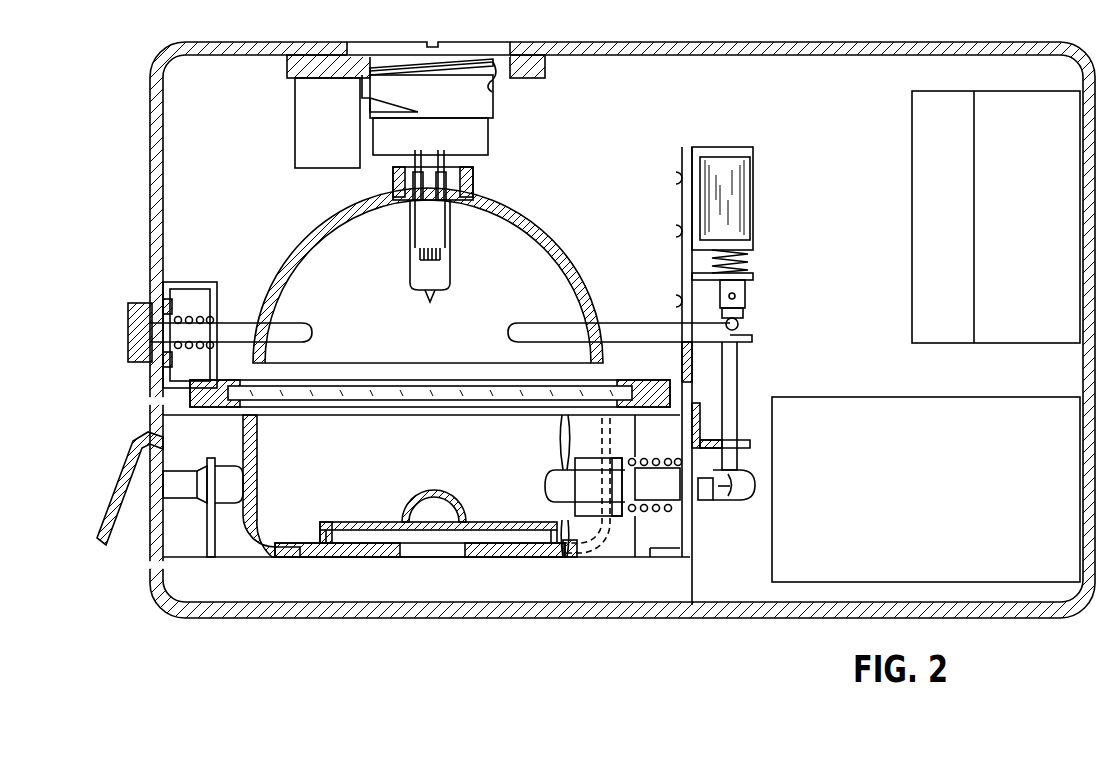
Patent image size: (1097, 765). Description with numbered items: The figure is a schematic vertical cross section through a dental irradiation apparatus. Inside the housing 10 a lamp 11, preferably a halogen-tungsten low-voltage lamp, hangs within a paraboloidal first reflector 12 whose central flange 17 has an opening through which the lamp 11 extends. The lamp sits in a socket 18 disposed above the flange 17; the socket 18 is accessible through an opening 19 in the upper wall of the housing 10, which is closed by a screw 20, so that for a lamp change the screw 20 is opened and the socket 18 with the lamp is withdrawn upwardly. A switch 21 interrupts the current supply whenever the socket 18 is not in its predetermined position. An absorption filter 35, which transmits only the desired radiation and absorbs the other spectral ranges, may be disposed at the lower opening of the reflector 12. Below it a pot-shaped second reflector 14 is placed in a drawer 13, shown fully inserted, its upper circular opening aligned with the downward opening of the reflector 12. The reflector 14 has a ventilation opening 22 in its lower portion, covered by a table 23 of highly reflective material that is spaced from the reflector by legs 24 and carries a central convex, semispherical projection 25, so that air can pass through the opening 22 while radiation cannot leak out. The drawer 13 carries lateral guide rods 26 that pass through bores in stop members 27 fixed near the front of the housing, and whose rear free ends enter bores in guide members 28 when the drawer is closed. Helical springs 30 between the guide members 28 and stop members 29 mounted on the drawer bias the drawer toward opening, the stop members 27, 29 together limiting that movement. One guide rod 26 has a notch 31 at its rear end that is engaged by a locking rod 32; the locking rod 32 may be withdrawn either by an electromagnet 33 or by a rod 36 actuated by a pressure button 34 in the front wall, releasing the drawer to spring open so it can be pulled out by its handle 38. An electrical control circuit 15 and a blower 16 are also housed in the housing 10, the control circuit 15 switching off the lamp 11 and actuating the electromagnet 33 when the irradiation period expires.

The housing 10 is at (663, 52).
The lamp 11 is at (445, 273).
The first reflector 12 is at (570, 260).
The drawer 13 is at (235, 540).
The second reflector 14 is at (260, 440).
The electrical control circuit 15 is at (896, 410).
The blower 16 is at (920, 143).
The central flange 17 is at (472, 176).
The socket 18 is at (473, 138).
The opening 19 is at (492, 78).
The screw 20 is at (455, 42).
The switch 21 is at (310, 134).
The ventilation opening 22 is at (426, 550).
The table 23 is at (372, 522).
The legs 24 is at (320, 532).
The convex semispherical projection 25 is at (450, 498).
The guide rods 26 is at (178, 490).
The stop members 27 is at (211, 558).
The guide members 28 is at (682, 543).
The stop members 29 is at (612, 543).
The helical springs 30 is at (642, 462).
The notch 31 is at (718, 486).
The locking rod 32 is at (736, 380).
The electromagnet 33 is at (730, 188).
The pressure button 34 is at (128, 326).
The absorption filter 35 is at (400, 392).
The rod 36 is at (236, 332).
The handle 38 is at (122, 467).